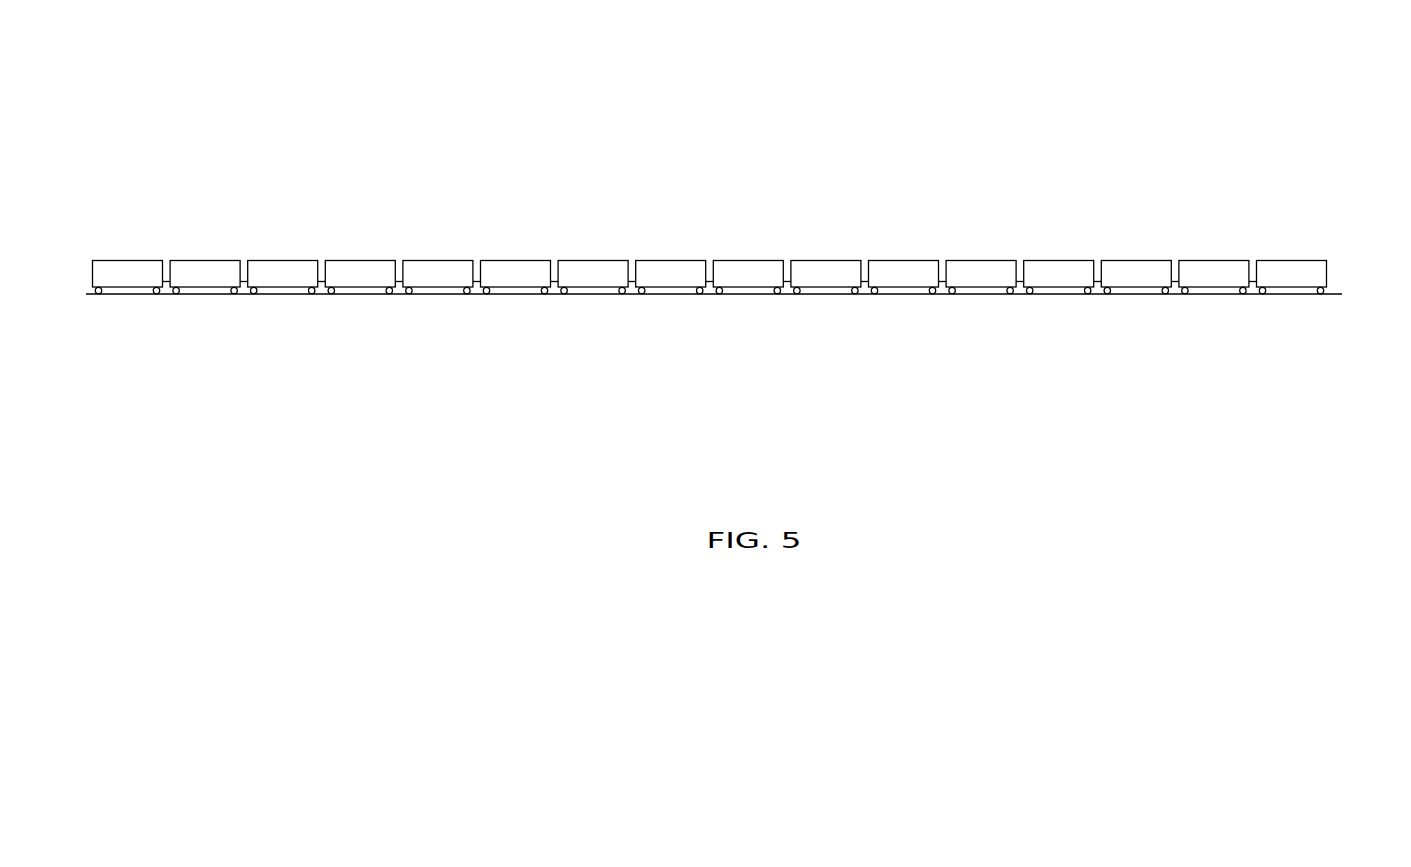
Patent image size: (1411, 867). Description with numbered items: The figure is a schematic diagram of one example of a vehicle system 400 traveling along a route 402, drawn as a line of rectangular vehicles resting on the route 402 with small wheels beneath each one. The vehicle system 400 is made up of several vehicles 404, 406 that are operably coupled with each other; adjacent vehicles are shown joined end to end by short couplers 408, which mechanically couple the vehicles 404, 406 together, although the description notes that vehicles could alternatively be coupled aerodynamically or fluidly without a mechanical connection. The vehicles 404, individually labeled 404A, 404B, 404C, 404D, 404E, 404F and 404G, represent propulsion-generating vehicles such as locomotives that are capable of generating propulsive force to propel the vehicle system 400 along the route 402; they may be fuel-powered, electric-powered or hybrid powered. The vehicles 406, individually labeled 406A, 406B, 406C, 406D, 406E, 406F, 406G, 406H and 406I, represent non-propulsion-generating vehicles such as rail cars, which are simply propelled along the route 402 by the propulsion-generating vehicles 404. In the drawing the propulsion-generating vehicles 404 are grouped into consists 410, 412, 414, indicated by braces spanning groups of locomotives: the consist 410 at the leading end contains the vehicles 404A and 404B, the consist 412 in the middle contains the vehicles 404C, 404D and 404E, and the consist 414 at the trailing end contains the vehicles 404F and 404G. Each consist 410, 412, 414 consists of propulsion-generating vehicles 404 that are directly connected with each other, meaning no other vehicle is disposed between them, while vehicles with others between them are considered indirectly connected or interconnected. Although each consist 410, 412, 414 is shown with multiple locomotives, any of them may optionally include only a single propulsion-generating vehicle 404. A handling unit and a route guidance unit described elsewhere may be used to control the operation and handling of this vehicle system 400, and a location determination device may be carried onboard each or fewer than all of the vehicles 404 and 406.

The vehicle system 400 is at (1178, 103).
The route 402 is at (1333, 296).
The propulsion-generating vehicle 404 is at (1332, 273).
The propulsion-generating vehicle 404A is at (1290, 287).
The propulsion-generating vehicle 404B is at (1212, 287).
The propulsion-generating vehicle 404C is at (902, 287).
The propulsion-generating vehicle 404D is at (824, 287).
The propulsion-generating vehicle 404E is at (746, 287).
The propulsion-generating vehicle 404F is at (203, 287).
The propulsion-generating vehicle 404G is at (126, 287).
The non-propulsion-generating vehicle 406 is at (1136, 255).
The non-propulsion-generating vehicle 406A is at (1134, 287).
The non-propulsion-generating vehicle 406B is at (1057, 287).
The non-propulsion-generating vehicle 406C is at (979, 287).
The non-propulsion-generating vehicle 406D is at (669, 287).
The non-propulsion-generating vehicle 406E is at (591, 287).
The non-propulsion-generating vehicle 406F is at (514, 287).
The non-propulsion-generating vehicle 406G is at (436, 287).
The non-propulsion-generating vehicle 406H is at (358, 287).
The non-propulsion-generating vehicle 406I is at (281, 287).
The coupler 408 is at (1020, 283).
The consist 410 is at (1326, 257).
The consist 412 is at (938, 257).
The consist 414 is at (240, 257).